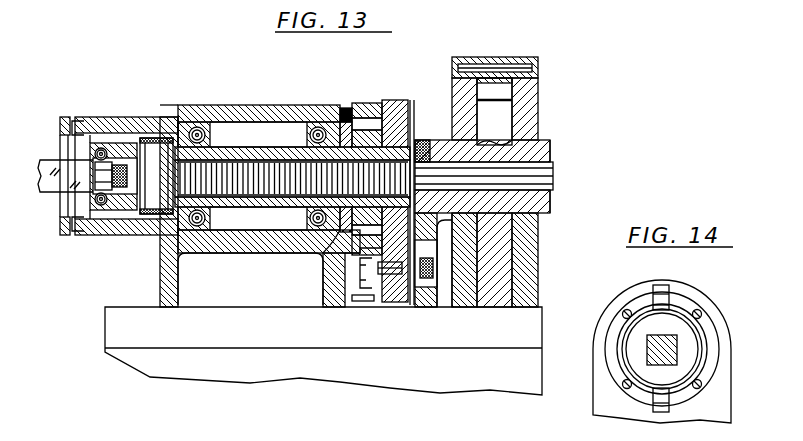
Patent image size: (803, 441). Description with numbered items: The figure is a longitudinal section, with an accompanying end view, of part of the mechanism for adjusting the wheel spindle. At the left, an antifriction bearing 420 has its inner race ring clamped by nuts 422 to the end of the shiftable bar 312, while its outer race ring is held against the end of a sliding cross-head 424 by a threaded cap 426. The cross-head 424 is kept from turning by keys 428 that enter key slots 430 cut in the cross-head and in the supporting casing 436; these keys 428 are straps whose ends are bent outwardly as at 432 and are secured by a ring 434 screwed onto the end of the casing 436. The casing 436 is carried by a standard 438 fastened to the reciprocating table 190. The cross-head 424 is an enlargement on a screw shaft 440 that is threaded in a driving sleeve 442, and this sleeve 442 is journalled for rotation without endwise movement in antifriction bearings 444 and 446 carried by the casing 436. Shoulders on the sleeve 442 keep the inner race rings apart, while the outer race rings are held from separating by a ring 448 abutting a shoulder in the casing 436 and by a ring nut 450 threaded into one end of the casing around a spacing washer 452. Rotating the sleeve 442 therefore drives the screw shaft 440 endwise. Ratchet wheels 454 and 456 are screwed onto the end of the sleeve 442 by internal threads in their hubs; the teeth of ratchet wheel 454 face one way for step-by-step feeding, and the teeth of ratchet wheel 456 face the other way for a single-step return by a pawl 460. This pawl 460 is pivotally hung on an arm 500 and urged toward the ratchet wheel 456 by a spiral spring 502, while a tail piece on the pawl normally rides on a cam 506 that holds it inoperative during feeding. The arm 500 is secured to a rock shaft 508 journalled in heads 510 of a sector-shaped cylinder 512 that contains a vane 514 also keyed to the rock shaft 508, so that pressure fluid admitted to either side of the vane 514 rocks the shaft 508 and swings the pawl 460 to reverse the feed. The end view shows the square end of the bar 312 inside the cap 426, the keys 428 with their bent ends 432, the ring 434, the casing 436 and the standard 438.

In FIG. 13, the reciprocating table 190 is at (323, 351).
In FIG. 13, the shiftable bar 312 is at (44, 160).
In FIG. 14, the shiftable bar 312 is at (647, 357).
In FIG. 13, the antifriction bearing 420 is at (107, 207).
In FIG. 13, the nuts 422 is at (117, 207).
In FIG. 13, the sliding cross-head 424 is at (138, 150).
In FIG. 13, the threaded cap 426 is at (100, 147).
In FIG. 14, the threaded cap 426 is at (683, 340).
In FIG. 13, the keys 428 is at (90, 118).
In FIG. 14, the keys 428 is at (661, 307).
In FIG. 14, the key slots 430 is at (670, 310).
In FIG. 13, the outwardly bent ends of keys 432 is at (76, 117).
In FIG. 14, the outwardly bent ends of keys 432 is at (661, 285).
In FIG. 13, the ring 434 is at (66, 120).
In FIG. 14, the ring 434 is at (713, 337).
In FIG. 13, the casing 436 is at (88, 238).
In FIG. 14, the casing 436 is at (713, 380).
In FIG. 13, the standard 438 is at (178, 280).
In FIG. 14, the standard 438 is at (717, 405).
In FIG. 13, the screw shaft 440 is at (247, 160).
In FIG. 13, the driving sleeve 442 is at (268, 147).
In FIG. 13, the antifriction bearing 444 is at (200, 122).
In FIG. 13, the antifriction bearing 446 is at (318, 122).
In FIG. 13, the ring 448 is at (183, 121).
In FIG. 13, the ring nut 450 is at (344, 108).
In FIG. 13, the spacing washer 452 is at (331, 241).
In FIG. 13, the ratchet wheel 454 is at (370, 102).
In FIG. 13, the ratchet wheel 456 is at (398, 100).
In FIG. 13, the pawl 460 is at (390, 258).
In FIG. 13, the arm 500 is at (437, 243).
In FIG. 13, the spiral spring 502 is at (412, 287).
In FIG. 13, the cam 506 is at (400, 270).
In FIG. 13, the rock shaft 508 is at (543, 182).
In FIG. 13, the heads 510 is at (523, 127).
In FIG. 13, the sector-shaped cylinder 512 is at (493, 50).
In FIG. 13, the vane 514 is at (537, 107).